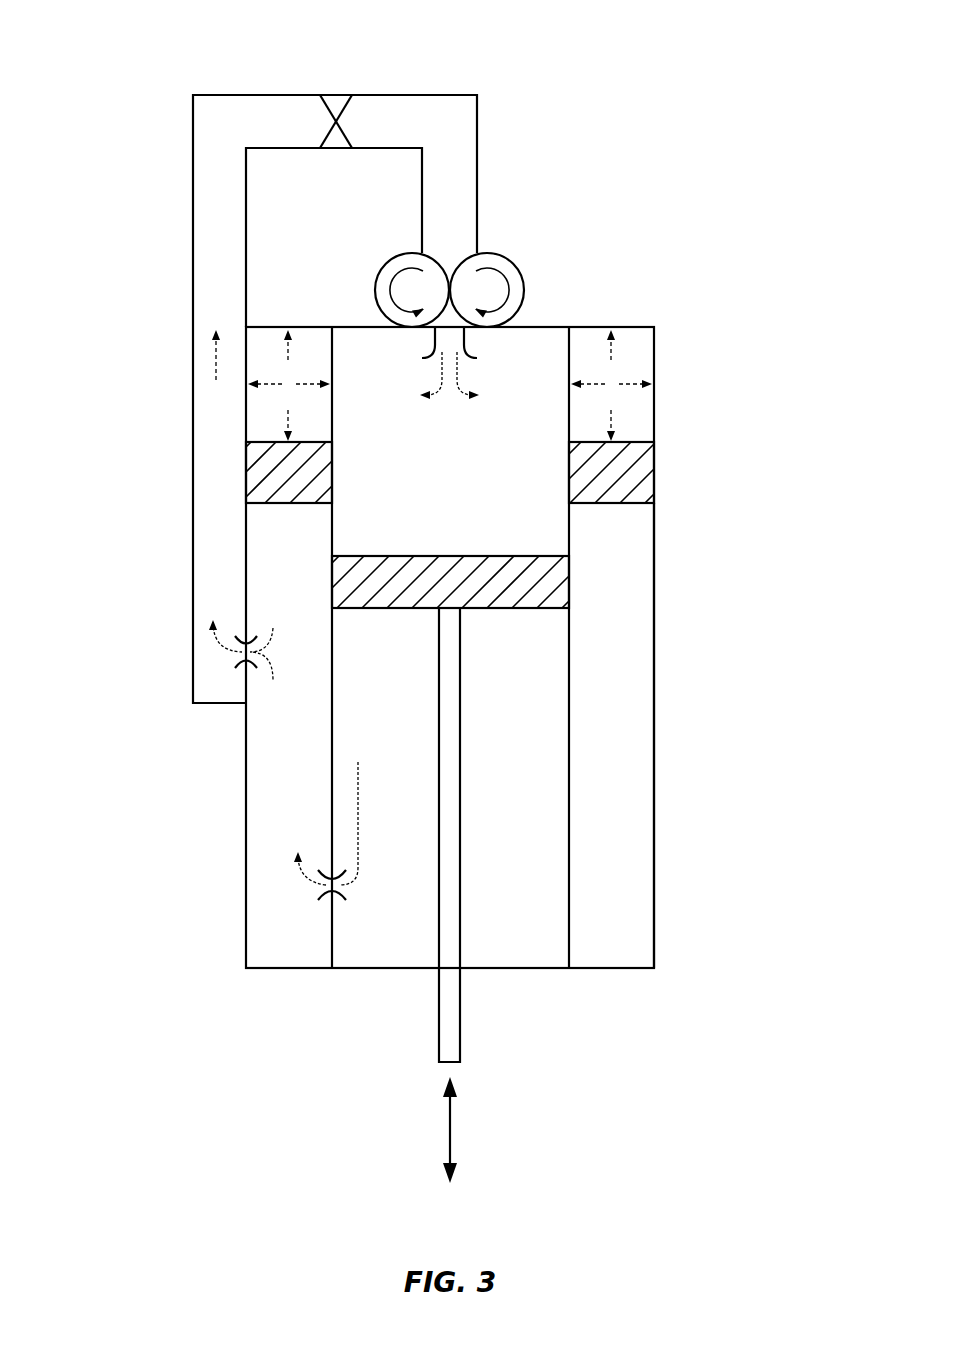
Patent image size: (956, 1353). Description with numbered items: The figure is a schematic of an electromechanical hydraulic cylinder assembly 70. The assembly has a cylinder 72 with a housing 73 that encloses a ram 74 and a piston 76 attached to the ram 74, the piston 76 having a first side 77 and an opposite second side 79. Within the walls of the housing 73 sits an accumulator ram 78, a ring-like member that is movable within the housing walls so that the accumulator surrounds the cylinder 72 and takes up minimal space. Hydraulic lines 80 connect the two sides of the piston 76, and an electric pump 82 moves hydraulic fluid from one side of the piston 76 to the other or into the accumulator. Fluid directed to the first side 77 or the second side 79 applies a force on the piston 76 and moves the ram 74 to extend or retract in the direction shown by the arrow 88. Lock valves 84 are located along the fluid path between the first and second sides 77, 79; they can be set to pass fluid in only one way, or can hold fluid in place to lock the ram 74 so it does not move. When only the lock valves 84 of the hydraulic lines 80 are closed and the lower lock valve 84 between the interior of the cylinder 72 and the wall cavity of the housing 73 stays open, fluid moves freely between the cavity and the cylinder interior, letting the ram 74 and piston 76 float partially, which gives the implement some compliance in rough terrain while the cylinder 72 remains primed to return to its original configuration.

The cylinder assembly 70 is at (200, 55).
The cylinder 72 is at (658, 594).
The housing 73 is at (655, 710).
The ram 74 is at (462, 843).
The piston 76 is at (477, 548).
The first side 77 is at (412, 556).
The accumulator ram 78 is at (655, 462).
The second side 79 is at (412, 608).
The hydraulic lines 80 is at (193, 195).
The electric pump 82 is at (524, 282).
The lock valves 84 is at (343, 110).
The arrow 88 is at (450, 1127).